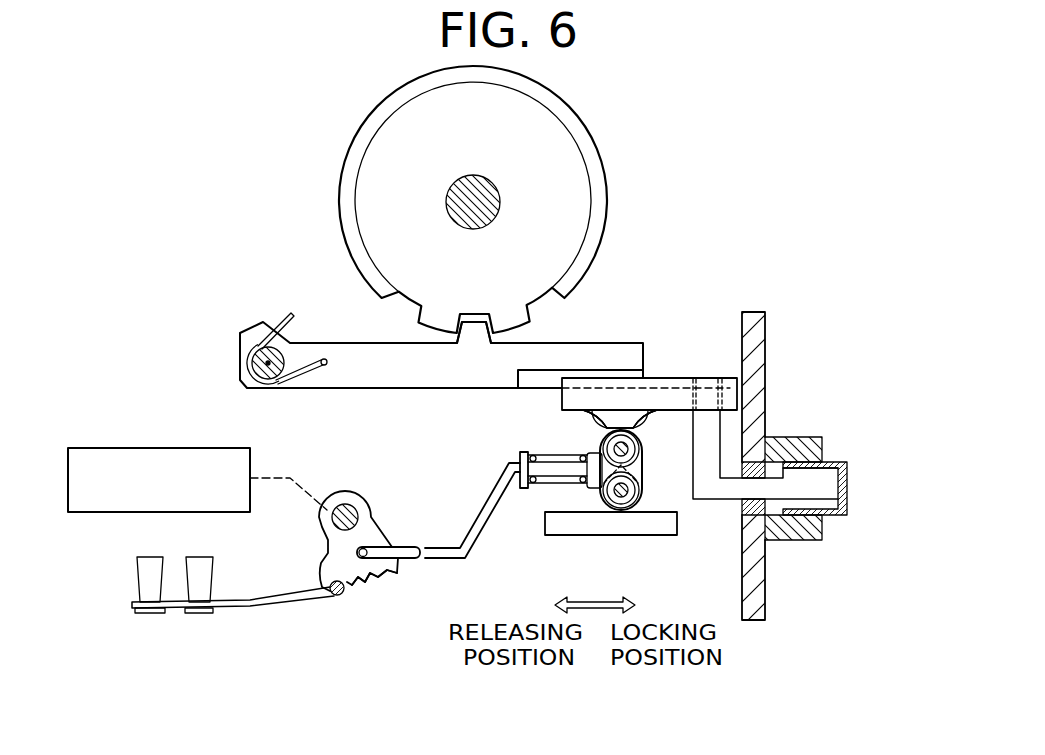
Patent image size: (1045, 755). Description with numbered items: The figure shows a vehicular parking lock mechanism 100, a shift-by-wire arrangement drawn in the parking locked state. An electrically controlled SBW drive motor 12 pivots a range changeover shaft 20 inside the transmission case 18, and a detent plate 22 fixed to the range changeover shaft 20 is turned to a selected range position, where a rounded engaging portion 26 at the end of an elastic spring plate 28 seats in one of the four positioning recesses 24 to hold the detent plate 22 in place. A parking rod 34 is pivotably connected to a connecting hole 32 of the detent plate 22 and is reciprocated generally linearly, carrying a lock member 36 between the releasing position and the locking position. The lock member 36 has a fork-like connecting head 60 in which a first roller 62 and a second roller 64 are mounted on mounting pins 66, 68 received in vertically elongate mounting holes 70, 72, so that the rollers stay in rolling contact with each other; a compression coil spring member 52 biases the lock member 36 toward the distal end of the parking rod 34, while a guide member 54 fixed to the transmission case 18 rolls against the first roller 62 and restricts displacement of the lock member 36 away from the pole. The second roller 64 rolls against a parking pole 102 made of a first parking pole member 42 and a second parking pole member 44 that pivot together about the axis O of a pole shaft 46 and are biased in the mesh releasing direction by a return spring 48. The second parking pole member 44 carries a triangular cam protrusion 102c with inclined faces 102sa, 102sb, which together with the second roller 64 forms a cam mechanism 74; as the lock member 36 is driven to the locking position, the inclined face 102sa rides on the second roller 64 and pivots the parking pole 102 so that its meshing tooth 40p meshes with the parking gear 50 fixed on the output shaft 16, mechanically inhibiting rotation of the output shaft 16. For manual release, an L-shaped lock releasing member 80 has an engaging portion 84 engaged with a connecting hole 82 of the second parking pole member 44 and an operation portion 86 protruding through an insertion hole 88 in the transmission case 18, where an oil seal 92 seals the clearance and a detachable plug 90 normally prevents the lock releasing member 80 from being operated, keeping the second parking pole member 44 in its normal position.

The SBW drive motor 12 is at (155, 447).
The output shaft 16 is at (482, 196).
The transmission case 18 is at (758, 363).
The range changeover shaft 20 is at (343, 505).
The detent plate 22 is at (370, 531).
The positioning recesses 24 is at (386, 573).
The engaging portion 26 is at (338, 600).
The spring plate 28 is at (242, 611).
The connecting hole 32 is at (355, 548).
The parking rod 34 is at (481, 522).
The lock member 36 is at (653, 510).
The meshing tooth 40p is at (467, 336).
The first parking pole member 42 is at (407, 375).
The second parking pole member 44 is at (617, 378).
The pole shaft 46 is at (283, 381).
The return spring 48 is at (265, 326).
The parking gear 50 is at (366, 130).
The spring member 52 is at (531, 453).
The guide member 54 is at (556, 520).
The connecting head 60 is at (600, 485).
The first roller 62 is at (630, 510).
The second roller 64 is at (640, 441).
The mounting pin 66 is at (603, 510).
The mounting pin 68 is at (628, 453).
The mounting hole 70 is at (613, 509).
The mounting hole 72 is at (607, 434).
The cam mechanism 74 is at (580, 427).
The lock releasing member 80 is at (702, 516).
The connecting hole 82 is at (693, 389).
The engaging portion 84 is at (731, 377).
The operation portion 86 is at (805, 490).
The insertion hole 88 is at (780, 450).
The plug 90 is at (828, 460).
The oil seal 92 is at (743, 505).
The vehicular parking lock mechanism 100 is at (711, 146).
The parking pole 102 is at (674, 291).
The cam protrusion 102c is at (634, 386).
The inclined face 102sa is at (596, 419).
The inclined face 102sb is at (649, 419).
The axis O is at (247, 388).